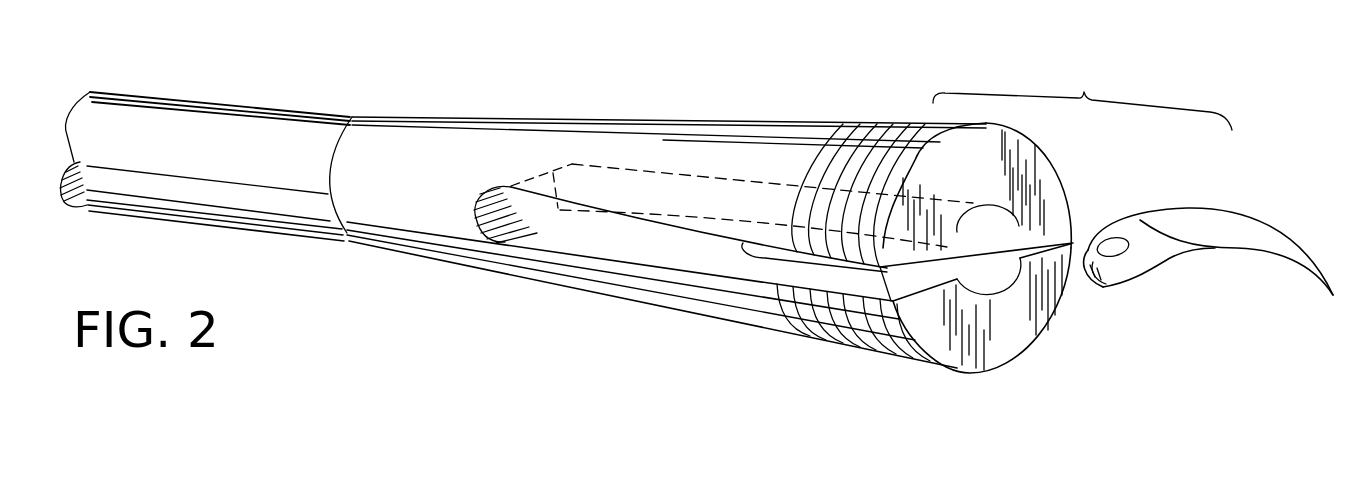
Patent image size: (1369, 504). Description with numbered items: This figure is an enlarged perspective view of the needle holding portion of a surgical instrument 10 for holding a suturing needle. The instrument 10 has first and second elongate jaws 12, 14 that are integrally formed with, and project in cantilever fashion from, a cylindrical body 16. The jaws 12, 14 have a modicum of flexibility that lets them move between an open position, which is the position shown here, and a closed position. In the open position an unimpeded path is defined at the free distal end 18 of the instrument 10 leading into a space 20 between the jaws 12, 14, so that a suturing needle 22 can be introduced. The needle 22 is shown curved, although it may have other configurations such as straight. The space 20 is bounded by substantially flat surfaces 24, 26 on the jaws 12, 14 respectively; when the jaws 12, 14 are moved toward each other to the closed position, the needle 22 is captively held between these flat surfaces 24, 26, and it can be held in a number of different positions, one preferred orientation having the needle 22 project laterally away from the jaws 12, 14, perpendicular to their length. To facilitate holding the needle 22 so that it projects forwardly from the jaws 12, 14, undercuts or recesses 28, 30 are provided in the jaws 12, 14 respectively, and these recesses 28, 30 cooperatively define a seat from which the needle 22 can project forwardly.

The surgical instrument 10 is at (549, 112).
The first elongate jaw 12 is at (968, 147).
The second elongate jaw 14 is at (995, 342).
The cylindrical body 16 is at (395, 204).
The free distal end 18 is at (1010, 190).
The space 20 is at (640, 243).
The suturing needle 22 is at (1192, 243).
The flat surface 24 is at (723, 238).
The flat surface 26 is at (833, 281).
The recess 28 is at (1003, 213).
The recess 30 is at (990, 278).